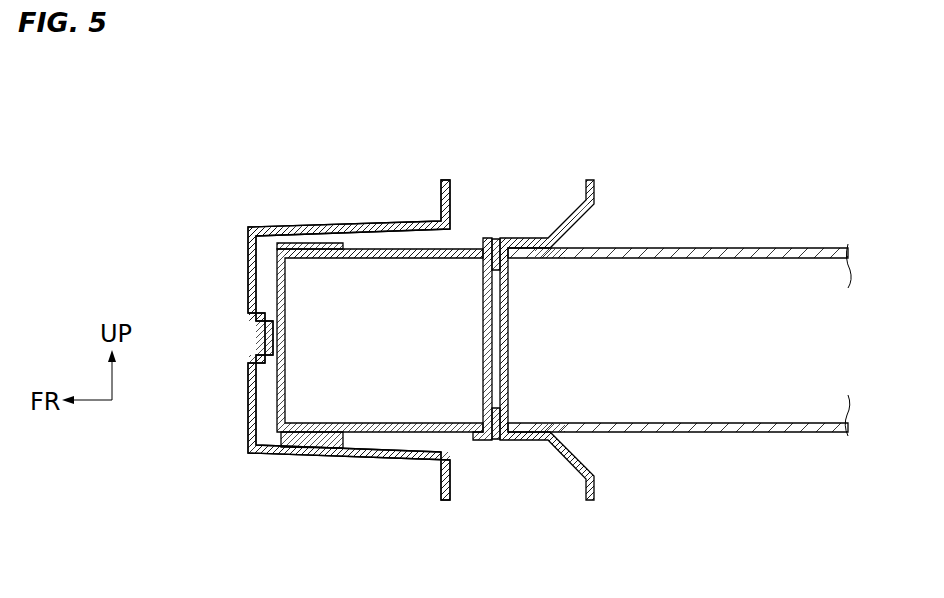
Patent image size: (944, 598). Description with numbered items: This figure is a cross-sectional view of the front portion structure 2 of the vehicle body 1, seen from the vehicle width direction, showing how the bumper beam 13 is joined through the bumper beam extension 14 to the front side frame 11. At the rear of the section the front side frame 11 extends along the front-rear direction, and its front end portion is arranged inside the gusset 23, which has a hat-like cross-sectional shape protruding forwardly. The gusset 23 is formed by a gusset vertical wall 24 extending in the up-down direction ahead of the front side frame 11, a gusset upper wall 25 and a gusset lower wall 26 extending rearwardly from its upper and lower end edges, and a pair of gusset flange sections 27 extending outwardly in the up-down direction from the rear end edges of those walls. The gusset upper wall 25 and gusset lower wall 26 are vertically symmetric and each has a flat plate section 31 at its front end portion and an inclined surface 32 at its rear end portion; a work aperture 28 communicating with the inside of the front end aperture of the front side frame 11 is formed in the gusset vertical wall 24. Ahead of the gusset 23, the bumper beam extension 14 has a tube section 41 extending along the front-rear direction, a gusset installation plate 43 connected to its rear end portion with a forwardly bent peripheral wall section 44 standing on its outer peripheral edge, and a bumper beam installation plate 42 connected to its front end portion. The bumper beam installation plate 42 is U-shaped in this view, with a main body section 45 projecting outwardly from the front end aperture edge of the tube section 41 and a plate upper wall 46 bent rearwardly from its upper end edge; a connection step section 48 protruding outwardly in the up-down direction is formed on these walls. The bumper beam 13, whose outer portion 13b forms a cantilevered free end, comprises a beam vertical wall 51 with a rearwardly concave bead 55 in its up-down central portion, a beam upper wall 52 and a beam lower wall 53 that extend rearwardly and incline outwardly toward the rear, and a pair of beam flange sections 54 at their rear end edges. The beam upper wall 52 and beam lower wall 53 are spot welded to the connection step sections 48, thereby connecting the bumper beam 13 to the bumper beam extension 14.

The vehicle body 1 is at (349, 340).
The front portion structure 2 is at (142, 154).
The front side frame 11 is at (757, 248).
The bumper beam 13 is at (280, 226).
The outer portion 13b is at (349, 340).
The bumper beam extension 14 is at (328, 284).
The gusset 23 is at (530, 239).
The gusset vertical wall 24 is at (508, 355).
The gusset upper wall 25 is at (543, 238).
The gusset lower wall 26 is at (541, 440).
The gusset flange section 27 is at (594, 192).
The work aperture 28 is at (500, 374).
The flat plate section 31 is at (510, 238).
The inclined surface 32 is at (553, 250).
The tube section 41 is at (374, 249).
The bumper beam installation plate 42 is at (252, 274).
The gusset installation plate 43 is at (483, 327).
The peripheral wall section 44 is at (483, 238).
The main body section 45 is at (278, 290).
The plate upper wall 46 is at (291, 237).
The connection step section 48 is at (323, 243).
The beam vertical wall 51 is at (248, 418).
The beam upper wall 52 is at (262, 227).
The beam lower wall 53 is at (262, 457).
The beam flange section 54 is at (440, 196).
The bead 55 is at (265, 340).